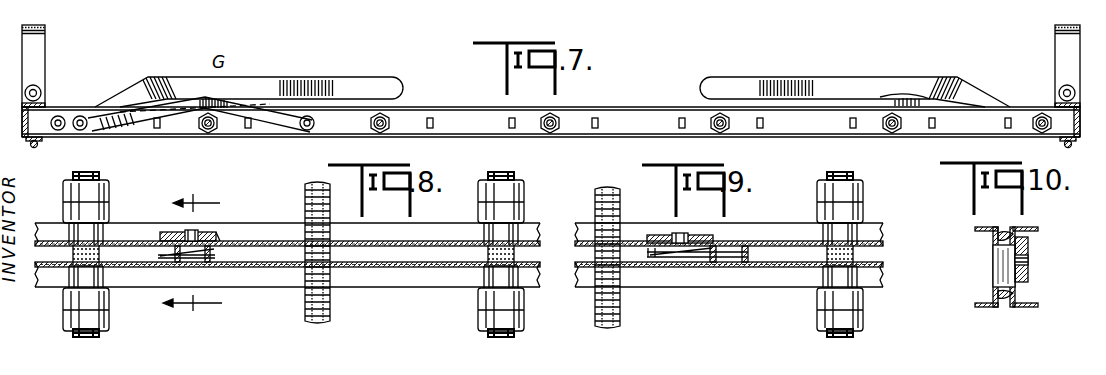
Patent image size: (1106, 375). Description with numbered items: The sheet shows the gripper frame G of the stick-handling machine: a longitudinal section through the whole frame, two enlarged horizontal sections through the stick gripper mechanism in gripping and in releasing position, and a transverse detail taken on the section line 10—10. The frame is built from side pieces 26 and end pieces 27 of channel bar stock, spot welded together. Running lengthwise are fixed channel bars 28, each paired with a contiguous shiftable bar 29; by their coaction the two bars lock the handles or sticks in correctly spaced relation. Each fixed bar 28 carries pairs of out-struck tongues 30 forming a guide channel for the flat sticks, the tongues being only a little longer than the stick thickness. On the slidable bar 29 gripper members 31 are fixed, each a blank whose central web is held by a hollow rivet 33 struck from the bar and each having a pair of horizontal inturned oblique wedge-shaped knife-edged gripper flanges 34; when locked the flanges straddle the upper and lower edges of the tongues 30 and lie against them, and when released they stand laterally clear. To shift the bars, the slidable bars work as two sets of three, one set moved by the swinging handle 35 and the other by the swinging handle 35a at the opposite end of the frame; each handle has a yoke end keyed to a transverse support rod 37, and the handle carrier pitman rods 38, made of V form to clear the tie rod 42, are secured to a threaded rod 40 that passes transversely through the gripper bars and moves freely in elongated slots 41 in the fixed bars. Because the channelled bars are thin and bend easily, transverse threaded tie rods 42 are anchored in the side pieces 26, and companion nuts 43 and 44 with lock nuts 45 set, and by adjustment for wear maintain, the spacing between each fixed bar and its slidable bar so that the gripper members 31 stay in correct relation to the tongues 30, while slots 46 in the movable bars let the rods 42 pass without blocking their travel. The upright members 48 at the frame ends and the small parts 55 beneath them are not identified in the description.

In FIG. 8, the section line 10 is at (192, 255).
In FIG. 7, the side pieces 26 is at (681, 2).
In FIG. 7, the end pieces 27 is at (42, 100).
In FIG. 7, the fixed channel bars 28 is at (635, 118).
In FIG. 8, the fixed channel bars 28 is at (420, 276).
In FIG. 9, the fixed channel bars 28 is at (789, 277).
In FIG. 10, the fixed channel bars 28 is at (983, 307).
In FIG. 8, the shiftable bar 29 is at (449, 233).
In FIG. 9, the shiftable bar 29 is at (772, 233).
In FIG. 10, the shiftable bar 29 is at (1037, 306).
In FIG. 8, the out-struck tongues 30 is at (226, 262).
In FIG. 9, the out-struck tongues 30 is at (721, 262).
In FIG. 10, the out-struck tongues 30 is at (1002, 275).
In FIG. 8, the gripper members 31 is at (224, 238).
In FIG. 9, the gripper members 31 is at (712, 240).
In FIG. 10, the gripper members 31 is at (1028, 243).
In FIG. 9, the hollow rivet 33 is at (675, 236).
In FIG. 10, the hollow rivet 33 is at (1028, 271).
In FIG. 9, the gripper flanges 34 is at (660, 256).
In FIG. 10, the gripper flanges 34 is at (1005, 234).
In FIG. 7, the swinging handle 35 is at (797, 85).
In FIG. 7, the swinging handle 35a is at (335, 93).
In FIG. 7, the transverse support rod 37 is at (69, 133).
In FIG. 7, the pitman rods 38 is at (895, 100).
In FIG. 7, the threaded rod 40 is at (311, 130).
In FIG. 8, the threaded rod 40 is at (331, 308).
In FIG. 9, the threaded rod 40 is at (597, 305).
In FIG. 8, the elongated slots 41 is at (280, 268).
In FIG. 9, the elongated slots 41 is at (639, 268).
In FIG. 7, the transverse threaded tie rods 42 is at (207, 131).
In FIG. 8, the transverse threaded tie rods 42 is at (78, 336).
In FIG. 9, the transverse threaded tie rods 42 is at (872, 256).
In FIG. 8, the companion nut 43 is at (107, 220).
In FIG. 9, the companion nut 43 is at (858, 214).
In FIG. 8, the companion nut 44 is at (107, 299).
In FIG. 9, the companion nut 44 is at (858, 298).
In FIG. 8, the lock nuts 45 is at (107, 190).
In FIG. 9, the lock nuts 45 is at (862, 193).
In FIG. 8, the slots 46 is at (128, 246).
In FIG. 9, the slots 46 is at (801, 245).
In FIG. 7, the post 48 is at (38, 47).
In FIG. 7, the roller 55 is at (33, 148).